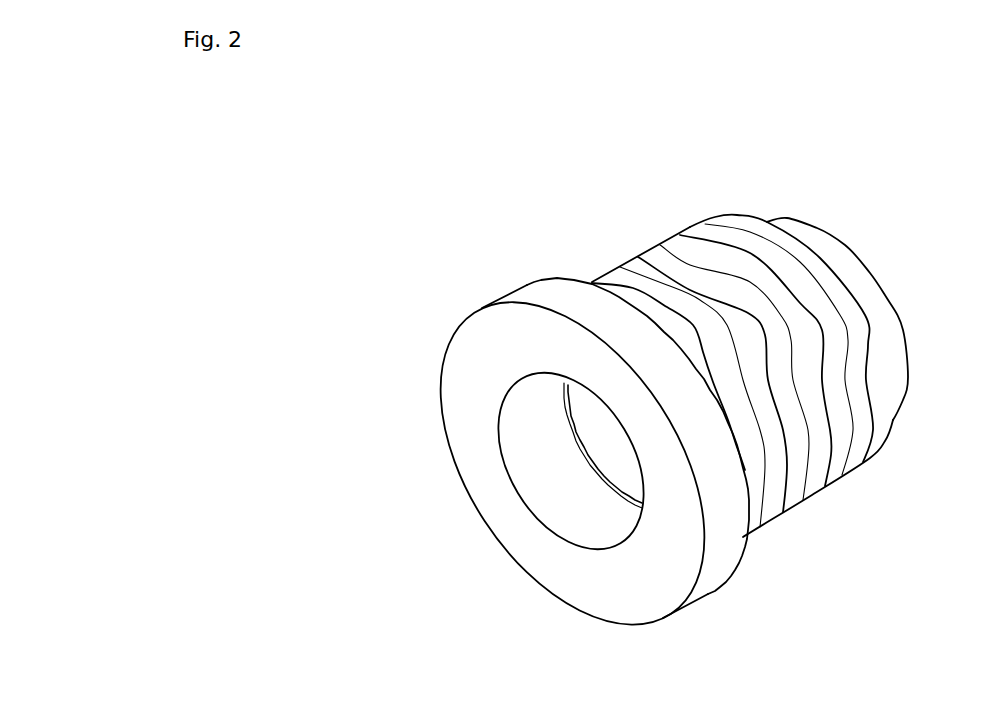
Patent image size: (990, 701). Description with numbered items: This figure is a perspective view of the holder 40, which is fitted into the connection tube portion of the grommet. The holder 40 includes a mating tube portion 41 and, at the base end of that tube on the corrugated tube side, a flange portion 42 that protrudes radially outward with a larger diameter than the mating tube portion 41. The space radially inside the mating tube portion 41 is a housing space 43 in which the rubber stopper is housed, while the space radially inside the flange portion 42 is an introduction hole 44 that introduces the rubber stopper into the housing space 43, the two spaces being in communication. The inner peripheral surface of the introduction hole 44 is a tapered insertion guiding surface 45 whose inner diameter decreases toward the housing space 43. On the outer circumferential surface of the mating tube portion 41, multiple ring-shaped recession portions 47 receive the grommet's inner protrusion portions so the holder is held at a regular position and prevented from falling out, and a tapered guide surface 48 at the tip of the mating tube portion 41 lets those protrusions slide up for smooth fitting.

The holder 40 is at (674, 175).
The mating tube portion 41 is at (846, 247).
The flange portion 42 is at (537, 297).
The housing space 43 is at (603, 442).
The introduction hole 44 is at (525, 420).
The insertion guiding surface 45 is at (562, 502).
The ring-shaped recession portions 47 is at (713, 270).
The guide surface 48 is at (891, 340).